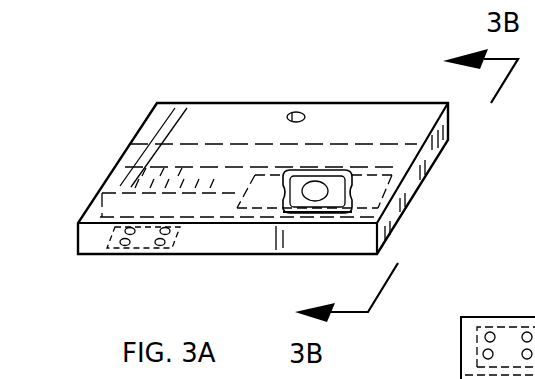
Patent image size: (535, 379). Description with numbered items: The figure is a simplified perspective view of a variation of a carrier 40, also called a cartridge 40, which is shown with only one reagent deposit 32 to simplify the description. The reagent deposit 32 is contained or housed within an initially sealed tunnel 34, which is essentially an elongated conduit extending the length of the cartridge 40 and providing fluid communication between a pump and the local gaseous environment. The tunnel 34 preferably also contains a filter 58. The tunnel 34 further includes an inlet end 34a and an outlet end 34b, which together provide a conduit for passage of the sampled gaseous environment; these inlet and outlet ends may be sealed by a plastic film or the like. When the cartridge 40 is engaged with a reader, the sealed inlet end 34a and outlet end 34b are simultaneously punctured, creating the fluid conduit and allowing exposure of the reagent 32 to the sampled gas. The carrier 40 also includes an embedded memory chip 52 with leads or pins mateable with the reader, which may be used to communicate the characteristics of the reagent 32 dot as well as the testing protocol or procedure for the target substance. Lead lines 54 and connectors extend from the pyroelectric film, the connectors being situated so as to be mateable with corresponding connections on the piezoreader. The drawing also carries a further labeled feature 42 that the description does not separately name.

The reagent deposit 32 is at (327, 172).
The tunnel 34 is at (115, 143).
The inlet end 34a is at (410, 183).
The outlet end 34b is at (93, 187).
The carrier 40 is at (168, 280).
The clip base 42 is at (330, 213).
The embedded memory chip 52 is at (503, 343).
The lead lines 54 is at (292, 112).
The filter 58 is at (163, 172).